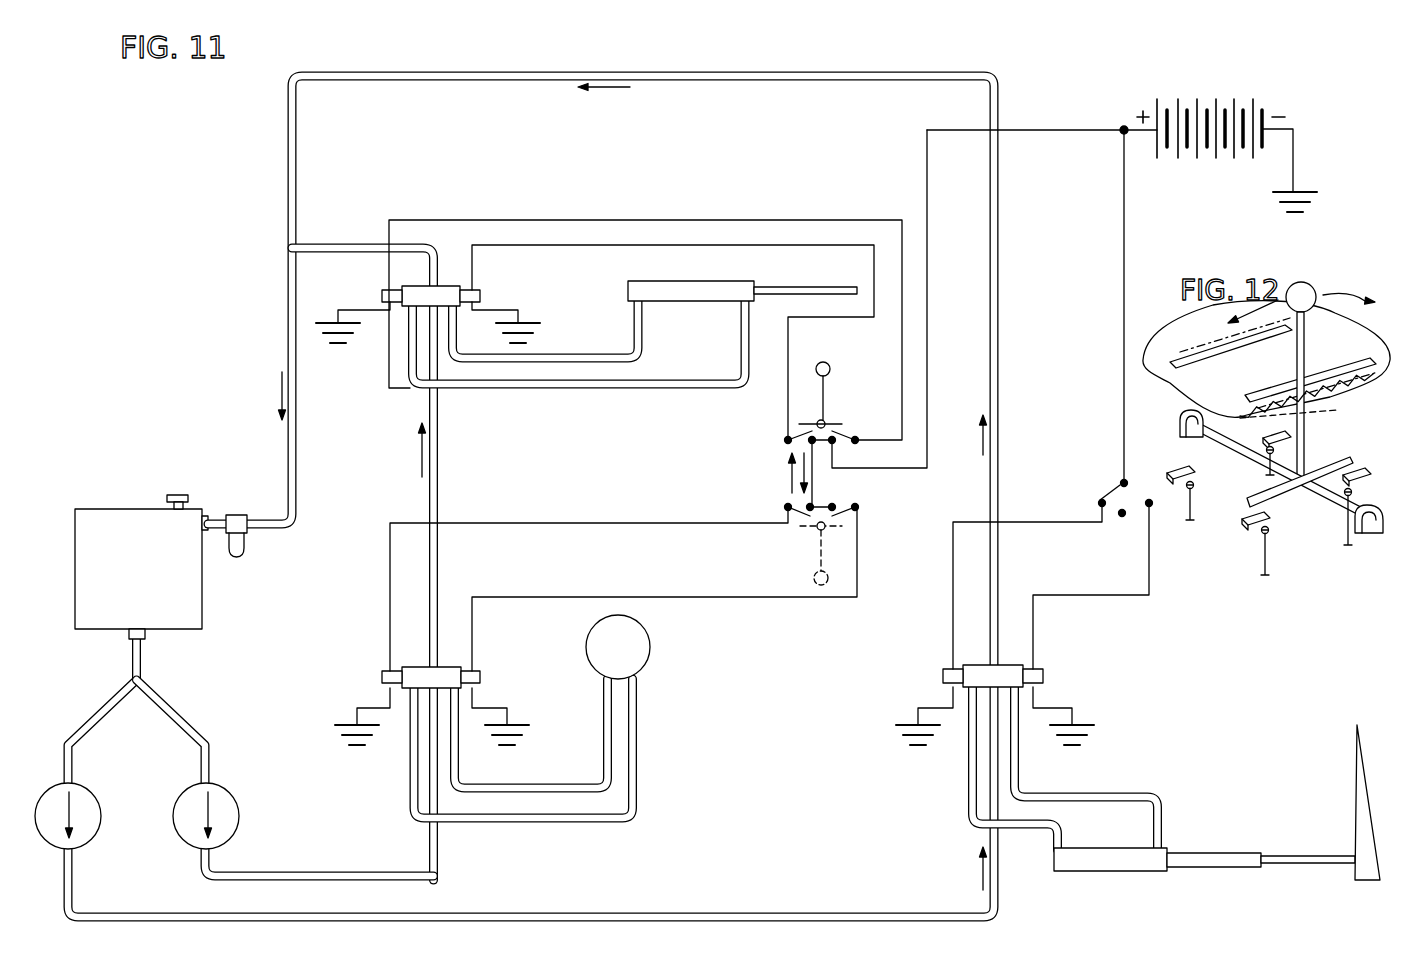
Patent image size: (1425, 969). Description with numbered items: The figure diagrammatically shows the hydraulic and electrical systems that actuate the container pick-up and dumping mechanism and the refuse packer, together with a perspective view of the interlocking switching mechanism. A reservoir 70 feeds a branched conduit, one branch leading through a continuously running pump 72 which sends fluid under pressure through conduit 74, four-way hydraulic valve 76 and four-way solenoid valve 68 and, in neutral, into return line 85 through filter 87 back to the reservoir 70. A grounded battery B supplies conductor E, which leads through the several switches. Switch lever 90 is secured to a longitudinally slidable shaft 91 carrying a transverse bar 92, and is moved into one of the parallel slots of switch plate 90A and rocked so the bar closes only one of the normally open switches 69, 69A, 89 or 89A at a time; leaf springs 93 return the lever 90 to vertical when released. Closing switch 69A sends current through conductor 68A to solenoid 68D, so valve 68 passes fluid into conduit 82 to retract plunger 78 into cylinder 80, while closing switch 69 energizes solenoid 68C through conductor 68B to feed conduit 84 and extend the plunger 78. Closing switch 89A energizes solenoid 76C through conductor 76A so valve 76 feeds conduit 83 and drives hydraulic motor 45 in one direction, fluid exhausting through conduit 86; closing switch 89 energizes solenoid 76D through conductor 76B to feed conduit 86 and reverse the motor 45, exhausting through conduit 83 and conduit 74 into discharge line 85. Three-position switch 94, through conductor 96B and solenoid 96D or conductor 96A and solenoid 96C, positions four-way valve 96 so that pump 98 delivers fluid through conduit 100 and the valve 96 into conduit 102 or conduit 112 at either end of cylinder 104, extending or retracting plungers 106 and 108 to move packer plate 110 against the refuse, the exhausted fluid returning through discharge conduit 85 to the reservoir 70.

In FIG. 11, the hydraulic motor 45 is at (650, 650).
In FIG. 11, the four-way solenoid valve 68 is at (441, 286).
In FIG. 11, the conductor 68A is at (625, 220).
In FIG. 12, the conductor 68A is at (1312, 390).
In FIG. 11, the conductor 68B is at (626, 244).
In FIG. 12, the conductor 68B is at (1168, 470).
In FIG. 11, the solenoid 68C is at (480, 296).
In FIG. 11, the solenoid 68D is at (382, 294).
In FIG. 11, the switch 69 is at (795, 443).
In FIG. 12, the switch 69 is at (1192, 470).
In FIG. 11, the switch 69A is at (850, 435).
In FIG. 12, the switch 69A is at (1282, 450).
In FIG. 11, the reservoir 70 is at (202, 598).
In FIG. 11, the pump 72 is at (228, 790).
In FIG. 11, the conduit 74 is at (438, 405).
In FIG. 11, the four-way hydraulic valve 76 is at (415, 667).
In FIG. 11, the conductor 76A is at (486, 597).
In FIG. 12, the conductor 76A is at (1370, 505).
In FIG. 11, the conductor 76B is at (390, 550).
In FIG. 12, the conductor 76B is at (1243, 527).
In FIG. 11, the solenoid 76C is at (480, 676).
In FIG. 11, the solenoid 76D is at (382, 676).
In FIG. 11, the plunger 78 is at (797, 287).
In FIG. 11, the cylinder 80 is at (668, 281).
In FIG. 11, the conduit 82 is at (707, 380).
In FIG. 11, the conduit 83 is at (603, 735).
In FIG. 11, the conduit 84 is at (604, 353).
In FIG. 11, the return line 85 is at (297, 433).
In FIG. 11, the conduit 86 is at (637, 733).
In FIG. 11, the filter 87 is at (244, 538).
In FIG. 11, the switch 89 is at (800, 522).
In FIG. 12, the switch 89 is at (1262, 540).
In FIG. 11, the switch 89A is at (857, 505).
In FIG. 12, the switch 89A is at (1357, 468).
In FIG. 11, the switch lever 90 is at (830, 370).
In FIG. 12, the switch lever 90 is at (1310, 285).
In FIG. 12, the switch plate 90A is at (1213, 323).
In FIG. 12, the shaft 91 is at (1178, 425).
In FIG. 12, the transverse bar 92 is at (1287, 495).
In FIG. 12, the springs 93 is at (1370, 380).
In FIG. 11, the three-position switch 94 is at (1100, 498).
In FIG. 11, the four-way valve 96 is at (1013, 665).
In FIG. 11, the conductor 96A is at (1033, 636).
In FIG. 11, the conductor 96B is at (953, 648).
In FIG. 11, the solenoid 96C is at (1043, 676).
In FIG. 11, the solenoid 96D is at (943, 676).
In FIG. 11, the pump 98 is at (90, 790).
In FIG. 11, the conduit 100 is at (555, 912).
In FIG. 11, the conduit 102 is at (968, 810).
In FIG. 11, the cylinder 104 is at (1085, 871).
In FIG. 11, the plunger 106 is at (1192, 867).
In FIG. 11, the plunger 108 is at (1280, 863).
In FIG. 11, the packer plate 110 is at (1355, 798).
In FIG. 11, the conduit 112 is at (1019, 748).
In FIG. 11, the battery B is at (1210, 100).
In FIG. 11, the conductor E is at (927, 240).
In FIG. 12, the conductor E is at (1190, 522).